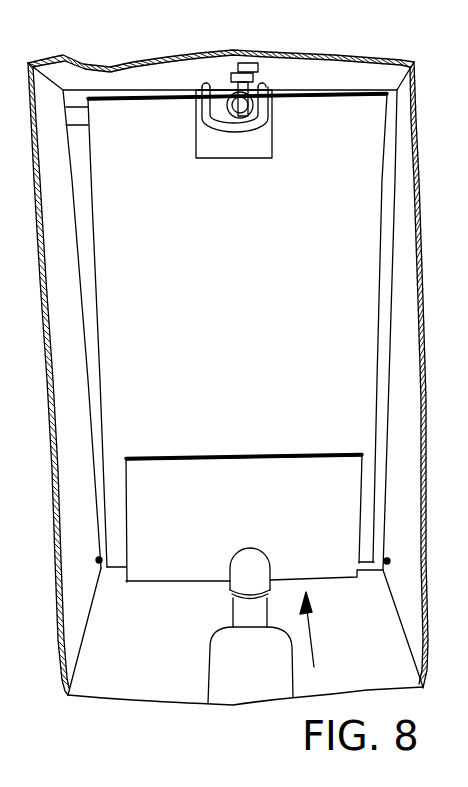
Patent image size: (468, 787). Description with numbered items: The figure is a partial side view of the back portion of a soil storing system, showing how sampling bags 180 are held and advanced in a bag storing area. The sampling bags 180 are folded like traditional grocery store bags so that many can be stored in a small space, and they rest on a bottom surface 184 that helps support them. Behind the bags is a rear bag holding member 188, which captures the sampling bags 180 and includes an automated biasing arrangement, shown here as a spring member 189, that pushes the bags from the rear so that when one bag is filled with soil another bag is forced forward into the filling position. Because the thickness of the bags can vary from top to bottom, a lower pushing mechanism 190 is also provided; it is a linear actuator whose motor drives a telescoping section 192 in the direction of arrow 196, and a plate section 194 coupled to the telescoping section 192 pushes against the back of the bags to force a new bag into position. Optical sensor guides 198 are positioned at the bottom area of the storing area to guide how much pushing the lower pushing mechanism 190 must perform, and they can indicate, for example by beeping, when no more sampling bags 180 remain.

The sampling bags 180 is at (256, 284).
The bottom surface 184 is at (357, 645).
The rear bag holding member 188 is at (262, 143).
The spring member 189 is at (223, 93).
The lower pushing mechanism 190 is at (230, 669).
The telescoping section 192 is at (242, 578).
The plate section 194 is at (217, 512).
The arrow 196 is at (312, 637).
The optical sensor guides 198 is at (102, 560).